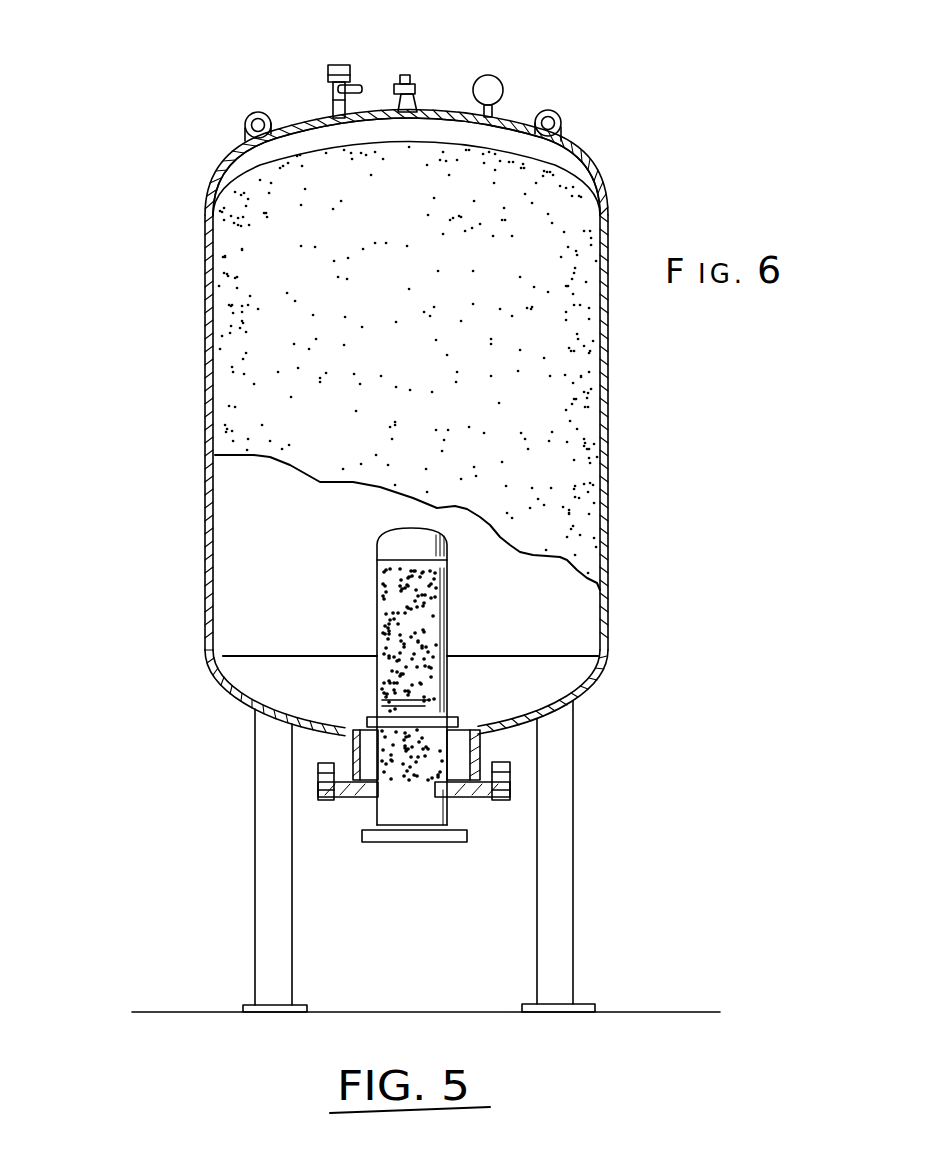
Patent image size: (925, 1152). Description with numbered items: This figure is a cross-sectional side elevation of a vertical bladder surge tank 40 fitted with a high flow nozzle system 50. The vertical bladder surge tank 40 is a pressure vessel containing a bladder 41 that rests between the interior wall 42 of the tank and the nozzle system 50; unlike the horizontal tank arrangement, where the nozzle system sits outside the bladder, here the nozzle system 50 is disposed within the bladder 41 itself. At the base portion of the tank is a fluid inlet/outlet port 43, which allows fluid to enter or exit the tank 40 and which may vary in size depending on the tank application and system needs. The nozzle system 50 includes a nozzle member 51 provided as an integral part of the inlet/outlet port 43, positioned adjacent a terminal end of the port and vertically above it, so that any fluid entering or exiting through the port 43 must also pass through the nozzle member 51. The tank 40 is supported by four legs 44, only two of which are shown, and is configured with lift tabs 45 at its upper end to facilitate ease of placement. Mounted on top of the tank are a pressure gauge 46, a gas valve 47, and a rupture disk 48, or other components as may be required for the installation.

The vertical bladder surge tank 40 is at (622, 433).
The bladder 41 is at (243, 172).
The interior wall 42 is at (579, 170).
The fluid inlet/outlet port 43 is at (427, 844).
The legs 44 is at (563, 905).
The lift tabs 45 is at (570, 136).
The pressure gauge 46 is at (512, 86).
The gas valve 47 is at (426, 73).
The rupture disk 48 is at (333, 64).
The high flow nozzle system 50 is at (450, 631).
The nozzle member 51 is at (393, 640).